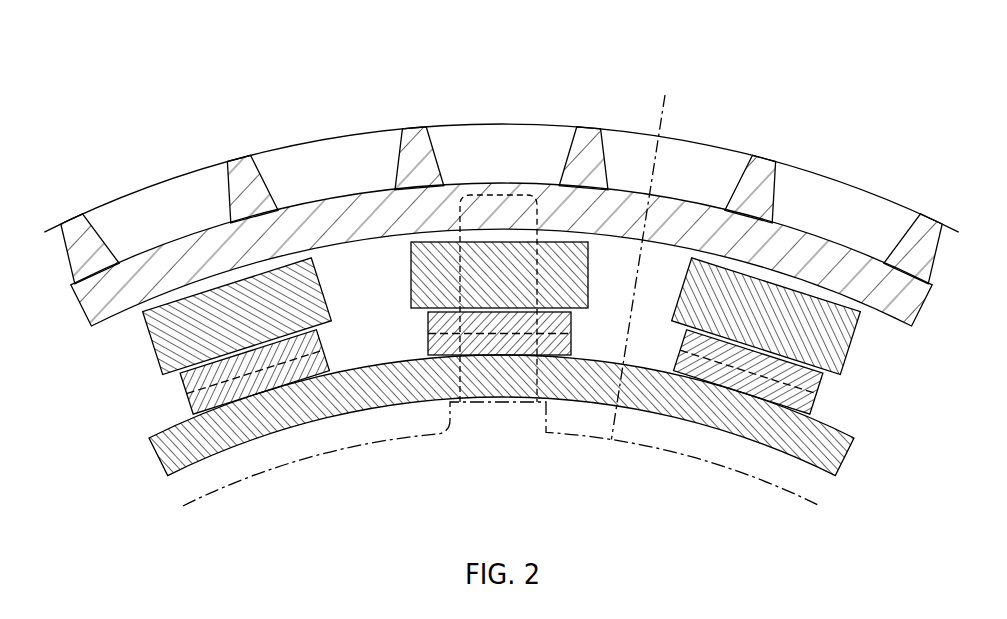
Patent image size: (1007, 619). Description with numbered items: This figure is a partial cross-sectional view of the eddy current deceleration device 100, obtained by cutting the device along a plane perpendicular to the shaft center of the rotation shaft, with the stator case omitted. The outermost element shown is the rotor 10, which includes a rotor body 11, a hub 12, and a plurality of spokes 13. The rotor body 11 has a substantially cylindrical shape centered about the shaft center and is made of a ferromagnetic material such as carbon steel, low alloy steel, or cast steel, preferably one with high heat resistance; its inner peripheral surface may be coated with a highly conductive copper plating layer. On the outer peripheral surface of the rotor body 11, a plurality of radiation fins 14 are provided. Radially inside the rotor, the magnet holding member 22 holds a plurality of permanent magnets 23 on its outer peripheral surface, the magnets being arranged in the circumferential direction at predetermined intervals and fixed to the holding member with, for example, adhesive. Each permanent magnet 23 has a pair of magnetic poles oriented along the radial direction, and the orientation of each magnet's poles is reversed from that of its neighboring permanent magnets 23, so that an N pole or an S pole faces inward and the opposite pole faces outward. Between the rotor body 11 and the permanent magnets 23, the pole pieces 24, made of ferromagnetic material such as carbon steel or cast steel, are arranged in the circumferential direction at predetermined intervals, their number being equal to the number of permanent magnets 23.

The deceleration device 100 is at (792, 33).
The rotor 10 is at (141, 179).
The rotor body 11 is at (331, 199).
The hub 12 is at (642, 256).
The spoke 13 is at (503, 190).
The radiation fin 14 is at (590, 126).
The magnet holding member 22 is at (203, 458).
The permanent magnet 23 is at (288, 372).
The pole piece 24 is at (240, 294).